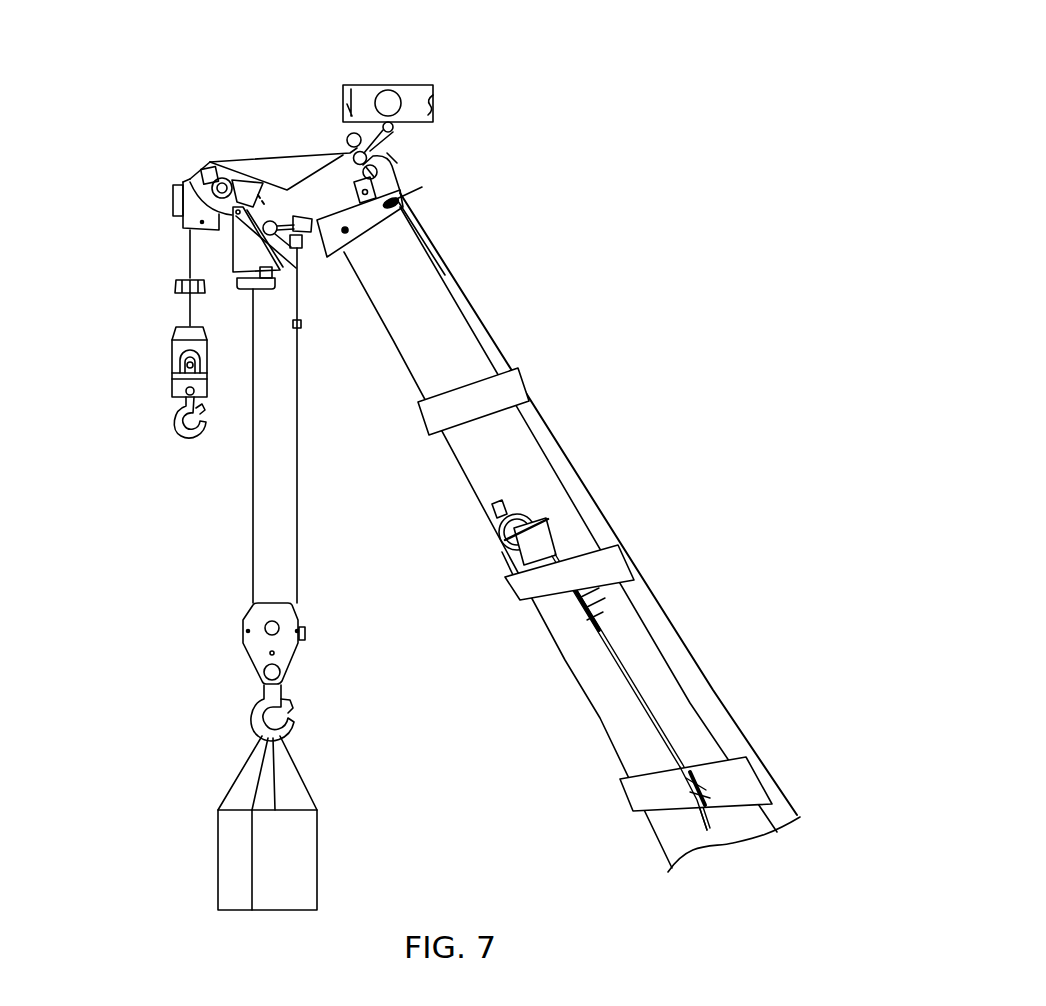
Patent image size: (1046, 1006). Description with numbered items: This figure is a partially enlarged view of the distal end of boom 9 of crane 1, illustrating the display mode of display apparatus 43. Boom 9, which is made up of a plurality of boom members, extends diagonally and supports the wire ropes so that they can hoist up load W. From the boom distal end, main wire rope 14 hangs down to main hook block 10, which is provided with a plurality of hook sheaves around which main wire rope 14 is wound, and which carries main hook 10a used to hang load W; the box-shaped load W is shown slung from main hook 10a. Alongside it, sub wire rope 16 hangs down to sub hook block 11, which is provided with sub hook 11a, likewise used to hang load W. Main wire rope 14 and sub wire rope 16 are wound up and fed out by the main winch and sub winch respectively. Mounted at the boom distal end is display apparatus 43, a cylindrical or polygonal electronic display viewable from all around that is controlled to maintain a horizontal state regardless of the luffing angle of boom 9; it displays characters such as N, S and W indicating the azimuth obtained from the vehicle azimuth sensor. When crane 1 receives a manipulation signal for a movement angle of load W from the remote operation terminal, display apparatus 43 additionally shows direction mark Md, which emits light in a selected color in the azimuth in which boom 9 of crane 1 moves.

The crane 1 is at (486, 457).
The boom 9 is at (565, 376).
The display apparatus 43 is at (433, 106).
The direction mark Md is at (396, 90).
The sub wire rope 16 is at (187, 262).
The sub hook block 11 is at (180, 351).
The sub hook 11a is at (174, 423).
The main wire rope 14 is at (298, 588).
The main hook block 10 is at (289, 656).
The main hook 10a is at (293, 707).
The load W is at (310, 863).